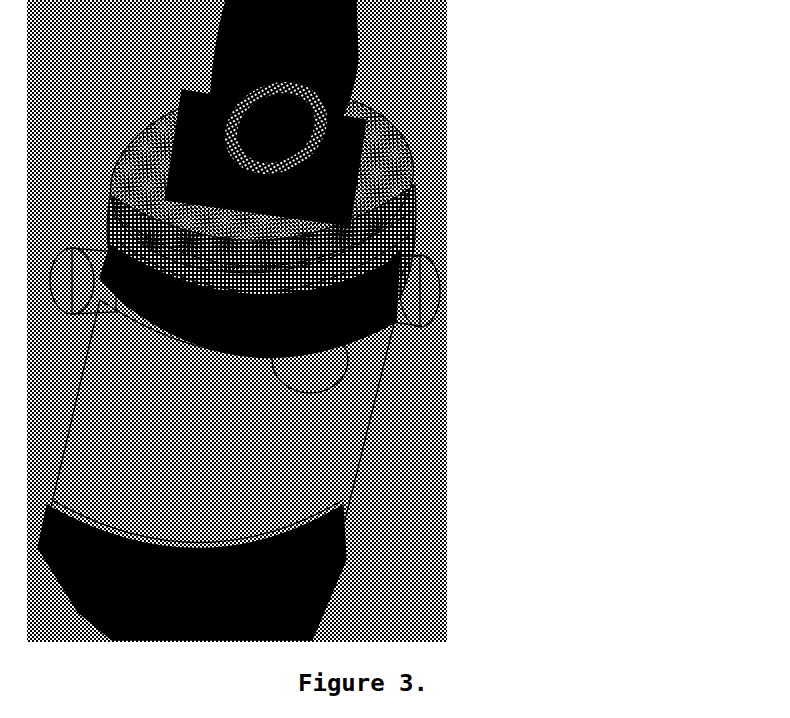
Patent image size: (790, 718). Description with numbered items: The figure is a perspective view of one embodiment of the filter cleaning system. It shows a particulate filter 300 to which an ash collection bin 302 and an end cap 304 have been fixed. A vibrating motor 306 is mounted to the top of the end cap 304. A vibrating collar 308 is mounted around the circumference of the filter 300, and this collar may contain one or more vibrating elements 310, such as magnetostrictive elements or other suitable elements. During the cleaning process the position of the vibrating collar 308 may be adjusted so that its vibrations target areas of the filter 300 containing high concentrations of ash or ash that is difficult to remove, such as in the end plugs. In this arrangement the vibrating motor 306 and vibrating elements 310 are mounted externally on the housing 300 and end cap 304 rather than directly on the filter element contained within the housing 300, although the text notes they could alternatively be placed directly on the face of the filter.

The particulate filter 300 is at (386, 426).
The ash collection bin 302 is at (365, 562).
The end cap 304 is at (433, 177).
The vibrating motor 306 is at (388, 76).
The vibrating collar 308 is at (408, 347).
The vibrating elements 310 is at (465, 279).